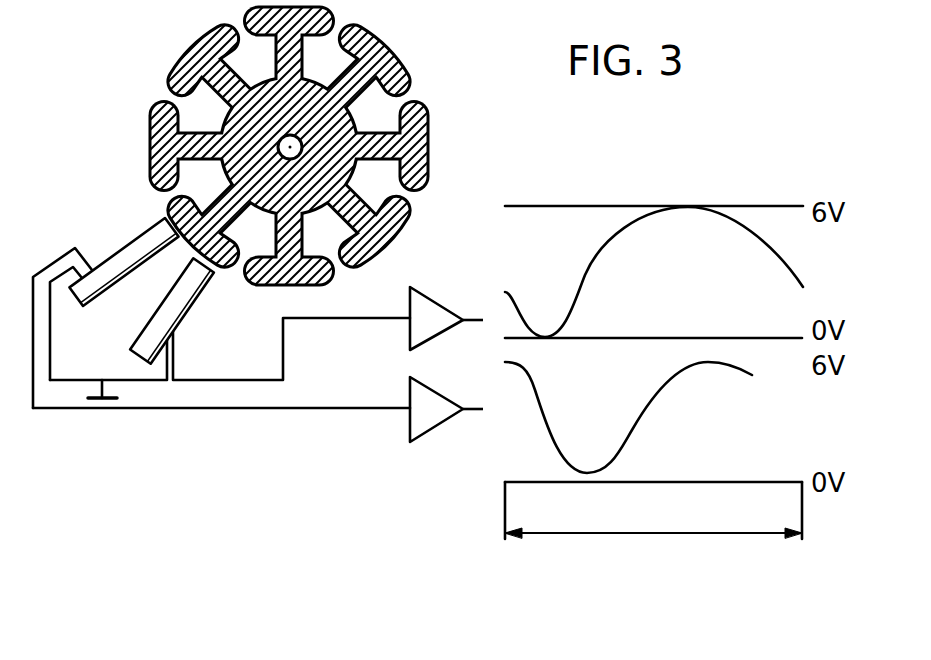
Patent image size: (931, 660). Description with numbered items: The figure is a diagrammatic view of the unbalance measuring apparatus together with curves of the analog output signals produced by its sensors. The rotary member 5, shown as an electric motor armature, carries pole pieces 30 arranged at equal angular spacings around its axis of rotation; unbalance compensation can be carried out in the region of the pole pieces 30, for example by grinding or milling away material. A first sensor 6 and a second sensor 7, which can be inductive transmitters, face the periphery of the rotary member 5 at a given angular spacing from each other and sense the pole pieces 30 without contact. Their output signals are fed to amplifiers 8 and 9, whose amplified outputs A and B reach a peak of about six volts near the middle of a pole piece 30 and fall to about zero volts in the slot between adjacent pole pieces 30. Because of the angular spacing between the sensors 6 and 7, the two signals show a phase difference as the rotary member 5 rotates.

The rotary member 5 is at (314, 137).
The pole pieces 30 is at (260, 17).
The first sensor 6 is at (117, 256).
The second sensor 7 is at (180, 298).
The amplifier 8 is at (425, 300).
The amplifier 9 is at (437, 418).